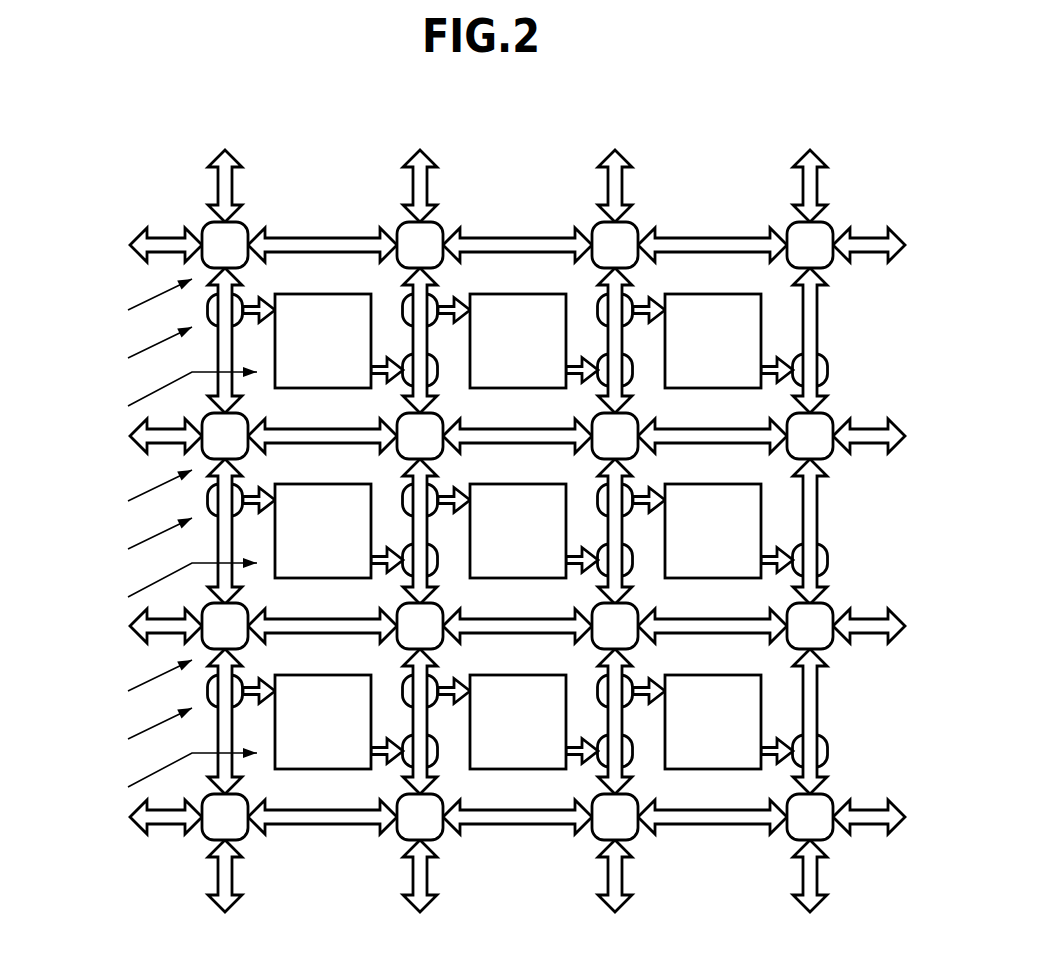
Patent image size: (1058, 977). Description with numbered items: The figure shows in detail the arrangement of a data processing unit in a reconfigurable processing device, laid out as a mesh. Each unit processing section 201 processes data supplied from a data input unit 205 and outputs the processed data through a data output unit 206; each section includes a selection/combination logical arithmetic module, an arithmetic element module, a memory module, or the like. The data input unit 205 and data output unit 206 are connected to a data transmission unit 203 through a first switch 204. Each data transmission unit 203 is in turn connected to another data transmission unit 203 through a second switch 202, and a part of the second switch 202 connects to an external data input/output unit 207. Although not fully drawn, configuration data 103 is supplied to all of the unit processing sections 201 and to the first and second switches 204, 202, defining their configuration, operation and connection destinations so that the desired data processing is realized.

The configuration data 103 is at (157, 534).
The unit processing section 201 is at (322, 308).
The second switch 202 is at (229, 242).
The data transmission unit 203 is at (349, 241).
The first switch 204 is at (208, 312).
The data input unit 205 is at (254, 303).
The data output unit 206 is at (381, 376).
The external data input/output unit 207 is at (233, 180).